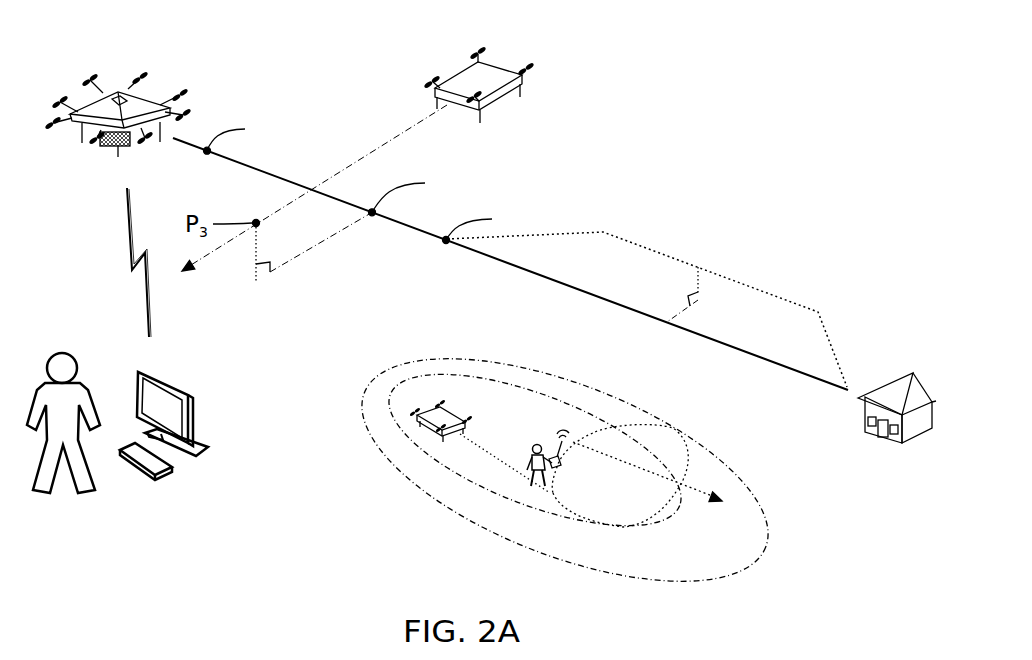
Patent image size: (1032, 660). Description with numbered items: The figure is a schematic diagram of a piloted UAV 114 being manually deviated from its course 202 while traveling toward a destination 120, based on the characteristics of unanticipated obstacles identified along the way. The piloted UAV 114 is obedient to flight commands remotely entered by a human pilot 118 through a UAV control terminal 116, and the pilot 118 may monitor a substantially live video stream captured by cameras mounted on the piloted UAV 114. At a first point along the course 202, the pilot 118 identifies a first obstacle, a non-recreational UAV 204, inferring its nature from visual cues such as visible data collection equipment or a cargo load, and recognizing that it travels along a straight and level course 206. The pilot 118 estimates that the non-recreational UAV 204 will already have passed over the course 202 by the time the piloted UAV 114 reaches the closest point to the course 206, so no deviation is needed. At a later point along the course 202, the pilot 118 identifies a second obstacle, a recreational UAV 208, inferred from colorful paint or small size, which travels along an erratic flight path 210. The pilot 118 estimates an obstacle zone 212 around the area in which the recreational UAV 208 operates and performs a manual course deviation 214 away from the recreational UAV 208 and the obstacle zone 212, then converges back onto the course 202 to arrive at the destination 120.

The piloted UAV 114 is at (117, 80).
The non-recreational UAV 204 is at (556, 62).
The course 206 is at (409, 128).
The course 202 is at (262, 172).
The manual course deviation 214 is at (657, 252).
The recreational UAV 208 is at (370, 388).
The erratic flight path 210 is at (513, 473).
The destination 120 is at (897, 427).
The pilot 118 is at (63, 455).
The UAV control terminal 116 is at (171, 483).
The obstacle zone 212 is at (712, 575).